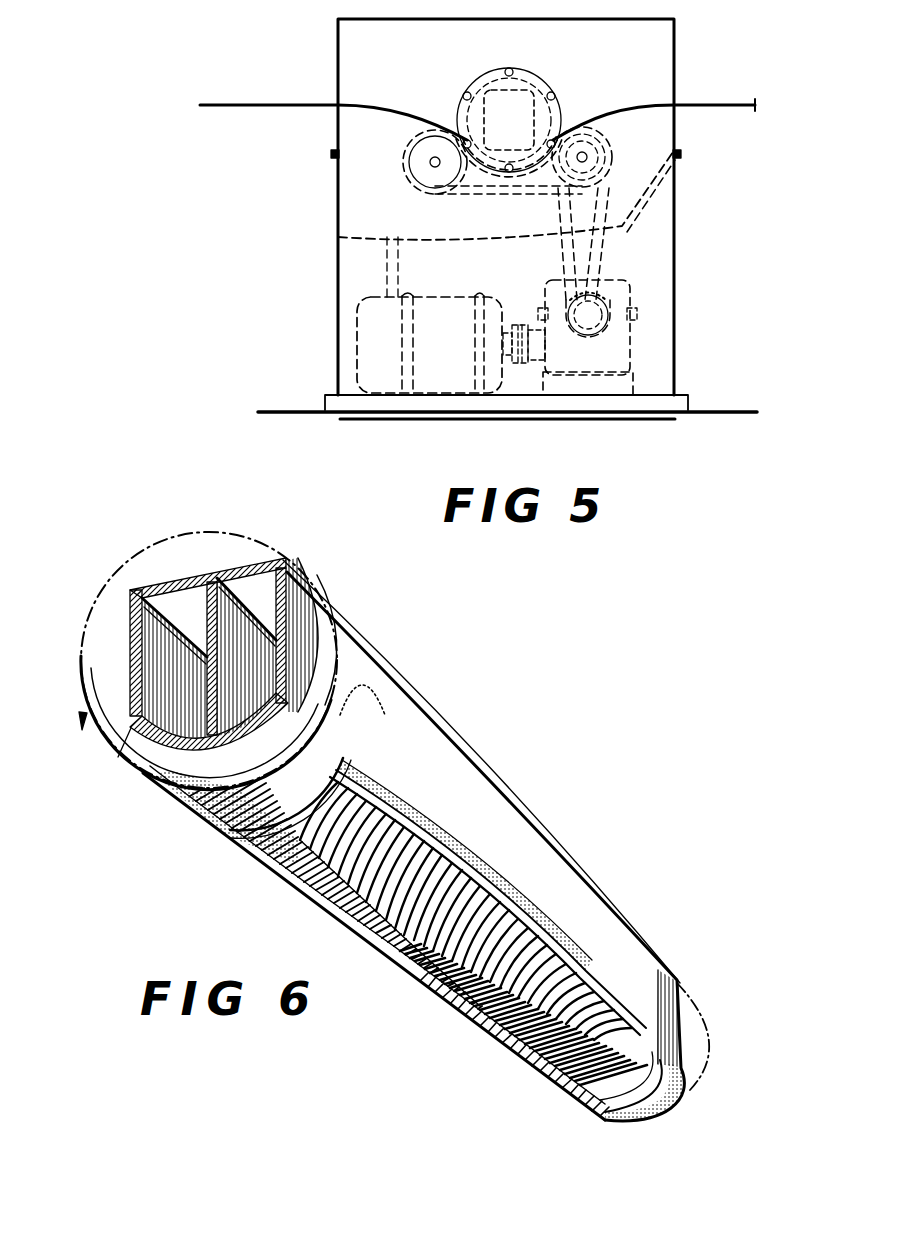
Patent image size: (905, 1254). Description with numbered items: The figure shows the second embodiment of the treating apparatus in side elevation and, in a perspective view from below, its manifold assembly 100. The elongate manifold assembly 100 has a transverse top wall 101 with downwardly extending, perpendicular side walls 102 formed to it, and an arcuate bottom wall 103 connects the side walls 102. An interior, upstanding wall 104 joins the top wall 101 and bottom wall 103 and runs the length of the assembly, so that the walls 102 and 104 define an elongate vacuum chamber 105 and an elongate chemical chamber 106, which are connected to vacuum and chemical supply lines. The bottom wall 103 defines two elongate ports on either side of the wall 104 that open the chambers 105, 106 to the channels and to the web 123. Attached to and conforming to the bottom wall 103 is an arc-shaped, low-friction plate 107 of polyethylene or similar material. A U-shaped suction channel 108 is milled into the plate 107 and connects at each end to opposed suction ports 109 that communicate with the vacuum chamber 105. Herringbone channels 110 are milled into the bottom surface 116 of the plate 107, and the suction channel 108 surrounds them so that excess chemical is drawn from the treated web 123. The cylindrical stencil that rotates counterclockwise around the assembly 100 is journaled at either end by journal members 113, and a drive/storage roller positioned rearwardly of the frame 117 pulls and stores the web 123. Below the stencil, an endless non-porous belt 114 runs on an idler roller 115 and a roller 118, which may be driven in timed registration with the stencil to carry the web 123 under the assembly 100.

In FIG. 5, the manifold assembly 100 is at (536, 85).
In FIG. 6, the manifold assembly 100 is at (301, 545).
In FIG. 6, the top wall 101 is at (172, 580).
In FIG. 6, the side walls 102 is at (128, 632).
In FIG. 6, the bottom wall 103 is at (133, 773).
In FIG. 6, the interior upstanding wall 104 is at (211, 612).
In FIG. 6, the vacuum chamber 105 is at (148, 590).
In FIG. 6, the chemical chamber 106 is at (254, 577).
In FIG. 6, the arc-shaped plate 107 is at (162, 772).
In FIG. 6, the U-shaped suction channel 108 is at (377, 800).
In FIG. 6, the suction ports 109 is at (167, 803).
In FIG. 6, the herringbone channels 110 is at (440, 912).
In FIG. 5, the journal members 113 is at (485, 82).
In FIG. 5, the endless belt 114 is at (480, 192).
In FIG. 5, the idler roller 115 is at (425, 172).
In FIG. 6, the bottom surface 116 is at (305, 763).
In FIG. 5, the frame 117 is at (676, 262).
In FIG. 5, the roller 118 is at (602, 160).
In FIG. 5, the web 123 is at (689, 103).